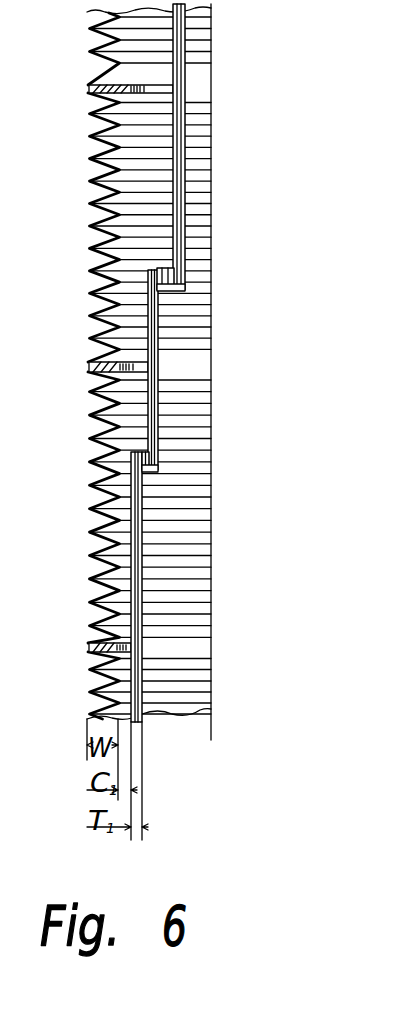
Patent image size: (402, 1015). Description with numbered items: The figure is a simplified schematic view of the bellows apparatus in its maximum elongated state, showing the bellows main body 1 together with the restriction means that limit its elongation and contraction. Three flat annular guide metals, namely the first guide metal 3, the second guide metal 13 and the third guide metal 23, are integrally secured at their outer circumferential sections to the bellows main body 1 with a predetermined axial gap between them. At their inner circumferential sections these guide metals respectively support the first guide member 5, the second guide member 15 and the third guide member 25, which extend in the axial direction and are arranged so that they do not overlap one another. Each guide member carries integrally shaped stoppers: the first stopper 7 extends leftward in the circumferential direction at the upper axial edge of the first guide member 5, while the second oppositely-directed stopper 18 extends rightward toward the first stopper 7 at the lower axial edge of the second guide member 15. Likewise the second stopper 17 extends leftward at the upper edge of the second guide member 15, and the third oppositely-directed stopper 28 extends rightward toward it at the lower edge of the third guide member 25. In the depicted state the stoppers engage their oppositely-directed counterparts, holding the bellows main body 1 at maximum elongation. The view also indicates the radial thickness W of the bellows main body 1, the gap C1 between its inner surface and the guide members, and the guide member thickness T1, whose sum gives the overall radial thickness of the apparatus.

The bellows main body 1 is at (86, 216).
The first guide metal 3 is at (88, 650).
The first guide member 5 is at (144, 577).
The first stopper 7 is at (163, 452).
The second guide metal 13 is at (90, 369).
The second guide member 15 is at (160, 346).
The second stopper 17 is at (170, 263).
The second oppositely-directed stopper 18 is at (155, 467).
The third guide metal 23 is at (92, 90).
The third guide member 25 is at (186, 104).
The third oppositely-directed stopper 28 is at (177, 285).